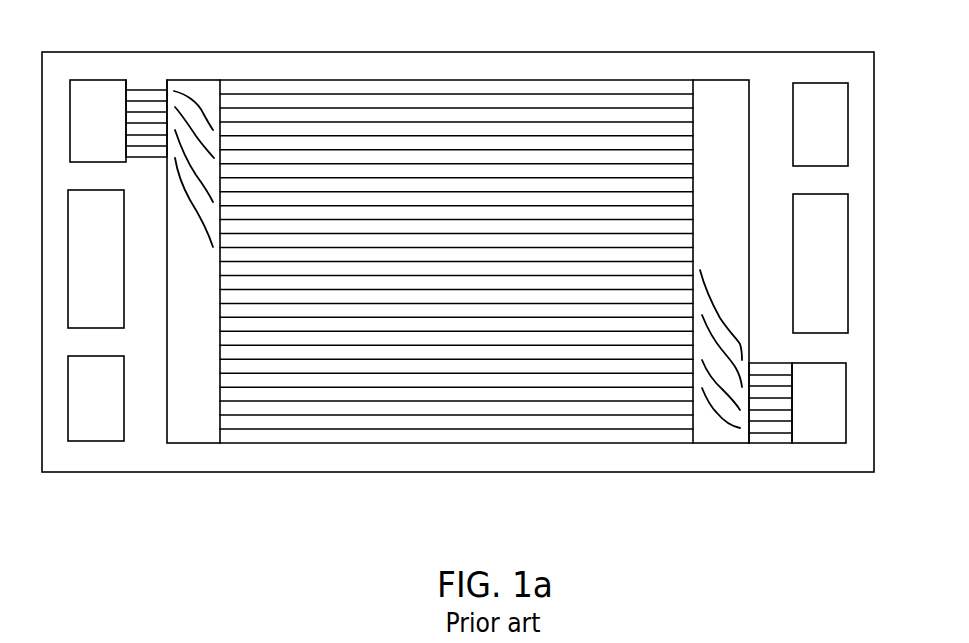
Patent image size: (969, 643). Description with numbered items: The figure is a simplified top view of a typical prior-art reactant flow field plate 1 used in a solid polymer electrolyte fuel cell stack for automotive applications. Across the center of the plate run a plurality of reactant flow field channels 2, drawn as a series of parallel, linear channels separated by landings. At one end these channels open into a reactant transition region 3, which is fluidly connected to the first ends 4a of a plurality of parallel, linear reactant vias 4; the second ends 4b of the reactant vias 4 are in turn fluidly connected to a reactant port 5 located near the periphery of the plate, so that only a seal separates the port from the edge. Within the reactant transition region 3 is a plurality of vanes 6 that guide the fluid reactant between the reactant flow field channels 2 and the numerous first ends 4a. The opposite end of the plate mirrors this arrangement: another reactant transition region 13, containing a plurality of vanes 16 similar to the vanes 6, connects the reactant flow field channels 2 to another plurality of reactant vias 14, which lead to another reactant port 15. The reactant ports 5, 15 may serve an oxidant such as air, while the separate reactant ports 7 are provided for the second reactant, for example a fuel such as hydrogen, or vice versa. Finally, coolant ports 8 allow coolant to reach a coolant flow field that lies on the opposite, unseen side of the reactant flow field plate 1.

The reactant flow field plate 1 is at (842, 43).
The reactant flow field channels 2 is at (468, 156).
The reactant transition region 3 is at (707, 436).
The reactant vias 4 is at (772, 445).
The first ends of reactant vias 4a is at (748, 445).
The second ends of reactant vias 4b is at (790, 432).
The reactant port 5 is at (818, 434).
The vanes 6 is at (712, 292).
The reactant ports 7 is at (95, 402).
The coolant ports 8 is at (95, 273).
The reactant transition region 13 is at (197, 422).
The reactant vias 14 is at (146, 96).
The reactant port 15 is at (105, 101).
The vanes 16 is at (188, 92).